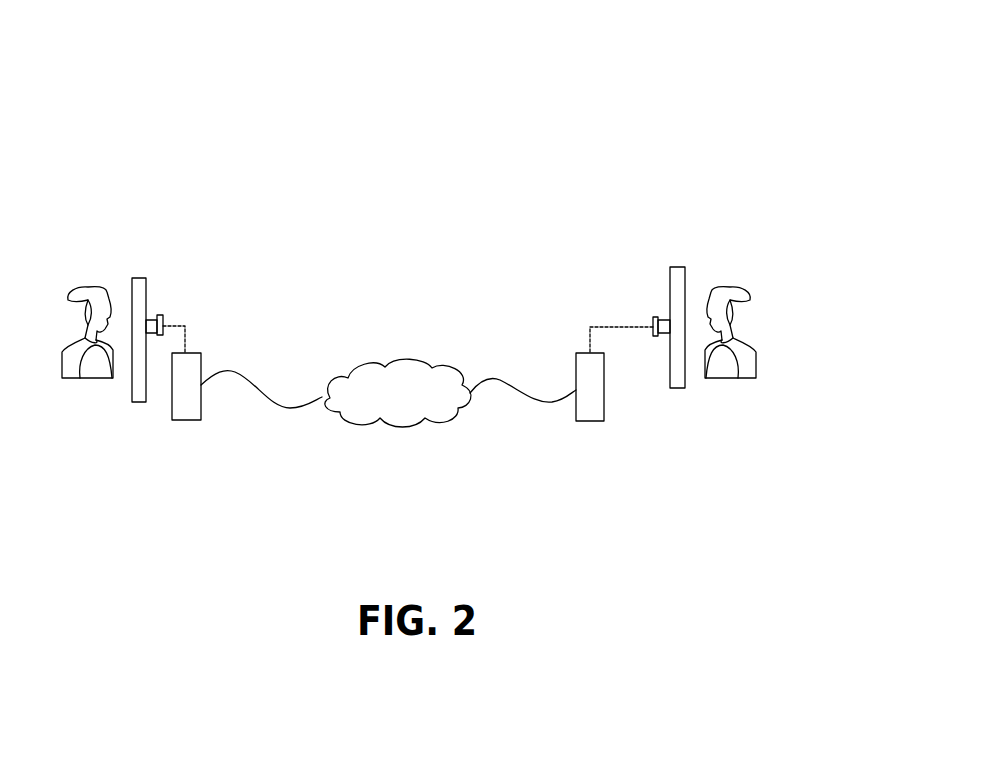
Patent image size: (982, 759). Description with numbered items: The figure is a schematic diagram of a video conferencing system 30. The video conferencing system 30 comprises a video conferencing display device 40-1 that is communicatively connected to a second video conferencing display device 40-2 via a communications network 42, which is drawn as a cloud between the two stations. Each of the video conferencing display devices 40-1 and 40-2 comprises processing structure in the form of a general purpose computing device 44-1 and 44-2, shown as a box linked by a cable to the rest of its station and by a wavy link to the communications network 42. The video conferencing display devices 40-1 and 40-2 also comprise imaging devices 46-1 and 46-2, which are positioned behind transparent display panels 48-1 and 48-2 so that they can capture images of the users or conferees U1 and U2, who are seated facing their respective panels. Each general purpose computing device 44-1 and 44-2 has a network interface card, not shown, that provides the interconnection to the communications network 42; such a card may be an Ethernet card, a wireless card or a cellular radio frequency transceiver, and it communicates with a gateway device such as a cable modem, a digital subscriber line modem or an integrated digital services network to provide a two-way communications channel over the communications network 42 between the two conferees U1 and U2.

The video conferencing system 30 is at (755, 127).
The video conferencing display device 40-1 is at (170, 195).
The video conferencing display device 40-2 is at (632, 188).
The communications network 42 is at (423, 360).
The general purpose computing device 44-1 is at (183, 420).
The general purpose computing device 44-2 is at (585, 422).
The imaging device 46-1 is at (163, 316).
The imaging device 46-2 is at (653, 316).
The transparent display panel 48-1 is at (140, 278).
The transparent display panel 48-2 is at (668, 270).
The user or conferee U1 is at (64, 378).
The user or conferee U2 is at (717, 380).